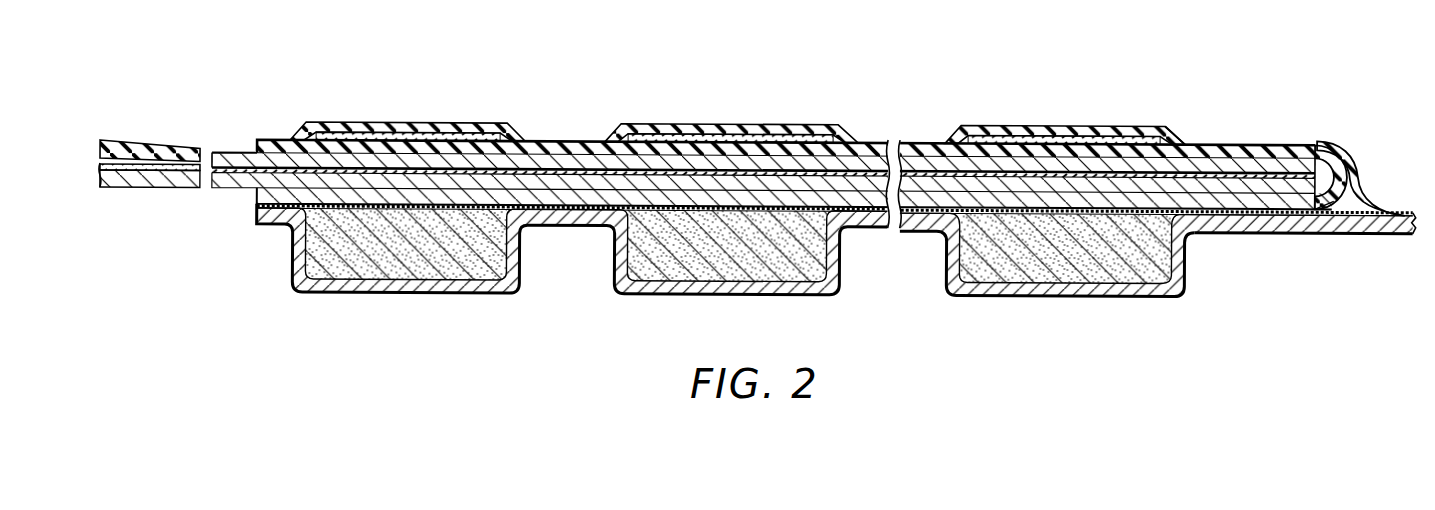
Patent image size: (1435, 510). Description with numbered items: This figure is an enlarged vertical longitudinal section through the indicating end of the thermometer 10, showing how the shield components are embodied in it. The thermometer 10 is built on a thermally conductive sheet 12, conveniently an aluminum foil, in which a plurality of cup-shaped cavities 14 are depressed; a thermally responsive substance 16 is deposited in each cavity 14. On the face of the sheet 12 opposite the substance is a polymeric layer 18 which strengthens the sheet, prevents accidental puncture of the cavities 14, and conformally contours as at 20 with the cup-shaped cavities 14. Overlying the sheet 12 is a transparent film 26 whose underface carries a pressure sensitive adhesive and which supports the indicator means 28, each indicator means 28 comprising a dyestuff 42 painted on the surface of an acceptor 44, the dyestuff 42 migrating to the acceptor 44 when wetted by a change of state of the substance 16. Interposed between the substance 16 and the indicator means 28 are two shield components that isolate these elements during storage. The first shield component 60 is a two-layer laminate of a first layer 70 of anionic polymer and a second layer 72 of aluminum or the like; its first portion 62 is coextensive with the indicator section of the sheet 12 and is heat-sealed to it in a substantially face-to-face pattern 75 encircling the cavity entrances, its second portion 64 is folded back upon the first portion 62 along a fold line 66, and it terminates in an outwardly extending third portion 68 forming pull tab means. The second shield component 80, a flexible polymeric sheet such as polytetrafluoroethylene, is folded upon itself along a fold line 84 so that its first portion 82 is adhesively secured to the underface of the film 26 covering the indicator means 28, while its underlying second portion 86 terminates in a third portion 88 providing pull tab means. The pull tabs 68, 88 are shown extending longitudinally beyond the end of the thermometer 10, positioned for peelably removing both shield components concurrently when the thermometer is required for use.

The thermometer 10 is at (1022, 92).
The thermally conductive sheet 12 is at (593, 213).
The cup-shaped cavities 14 is at (512, 245).
The thermally responsive substance 16 is at (472, 262).
The layer 18 is at (1222, 229).
The conformal contour of layer 20 is at (300, 278).
The transparent film 26 is at (1337, 152).
The indicator means 28 is at (1175, 138).
The dyestuff 42 is at (623, 137).
The acceptor 44 is at (647, 128).
The first shield component 60 is at (170, 195).
The first portion of first shield component 62 is at (253, 193).
The second portion of first shield component 64 is at (1323, 178).
The fold line 66 is at (1320, 196).
The third portion of first shield component 68 is at (96, 182).
The first layer 70 is at (397, 203).
The second layer 72 is at (433, 193).
The heat seal pattern 75 is at (277, 212).
The second shield component 80 is at (222, 146).
The first portion of second shield component 82 is at (262, 139).
The fold line 84 is at (1313, 156).
The second portion of second shield component 86 is at (357, 158).
The third portion of second shield component 88 is at (148, 146).